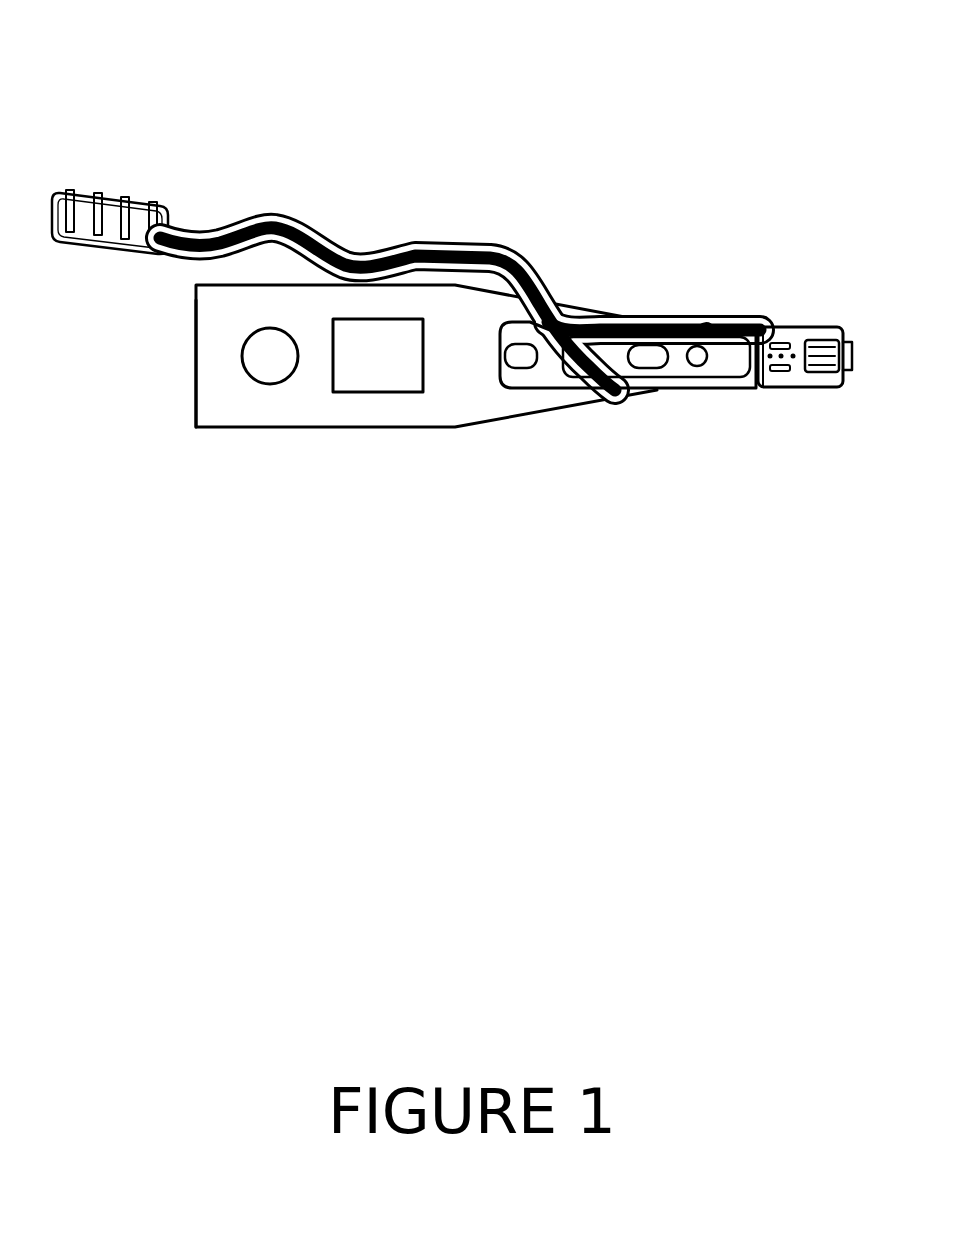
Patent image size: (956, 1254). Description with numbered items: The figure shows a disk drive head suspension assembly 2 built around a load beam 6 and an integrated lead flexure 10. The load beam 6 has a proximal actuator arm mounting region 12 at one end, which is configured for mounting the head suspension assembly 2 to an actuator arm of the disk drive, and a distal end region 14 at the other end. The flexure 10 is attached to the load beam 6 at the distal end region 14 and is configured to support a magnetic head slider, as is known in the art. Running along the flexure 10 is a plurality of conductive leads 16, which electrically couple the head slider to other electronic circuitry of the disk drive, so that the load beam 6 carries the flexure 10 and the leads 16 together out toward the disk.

The head suspension assembly 2 is at (215, 130).
The load beam 6 is at (235, 427).
The flexure 10 is at (557, 383).
The proximal actuator arm mounting region 12 is at (196, 402).
The distal end region 14 is at (680, 325).
The conductive leads 16 is at (740, 385).